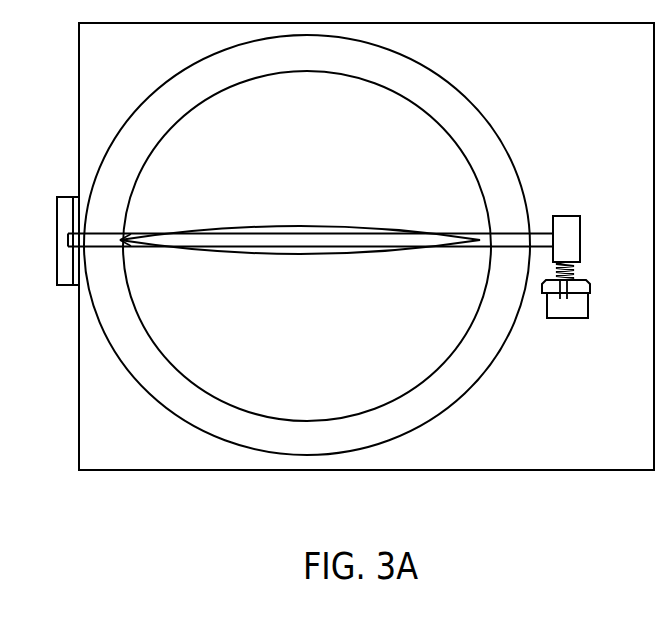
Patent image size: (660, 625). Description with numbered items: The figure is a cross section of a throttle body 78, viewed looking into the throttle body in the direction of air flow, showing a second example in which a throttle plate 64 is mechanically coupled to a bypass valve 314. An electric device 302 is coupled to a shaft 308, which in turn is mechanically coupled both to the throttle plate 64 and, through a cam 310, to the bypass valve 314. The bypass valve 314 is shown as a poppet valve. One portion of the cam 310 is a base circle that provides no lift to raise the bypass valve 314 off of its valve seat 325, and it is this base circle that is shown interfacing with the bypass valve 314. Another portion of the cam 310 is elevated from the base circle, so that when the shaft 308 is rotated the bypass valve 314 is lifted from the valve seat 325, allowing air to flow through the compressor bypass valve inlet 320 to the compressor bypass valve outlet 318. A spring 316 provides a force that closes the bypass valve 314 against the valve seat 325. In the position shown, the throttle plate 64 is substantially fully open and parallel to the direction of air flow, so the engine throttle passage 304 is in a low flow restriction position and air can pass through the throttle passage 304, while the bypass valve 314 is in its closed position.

The throttle body 78 is at (186, 471).
The electric device 302 is at (66, 196).
The engine throttle passage 304 is at (324, 164).
The shaft 308 is at (307, 245).
The throttle plate 64 is at (246, 256).
The cam 310 is at (553, 216).
The spring 316 is at (577, 272).
The compressor bypass valve inlet 320 is at (582, 288).
The valve seat 325 is at (588, 297).
The compressor bypass valve outlet 318 is at (551, 308).
The bypass valve 314 is at (568, 296).